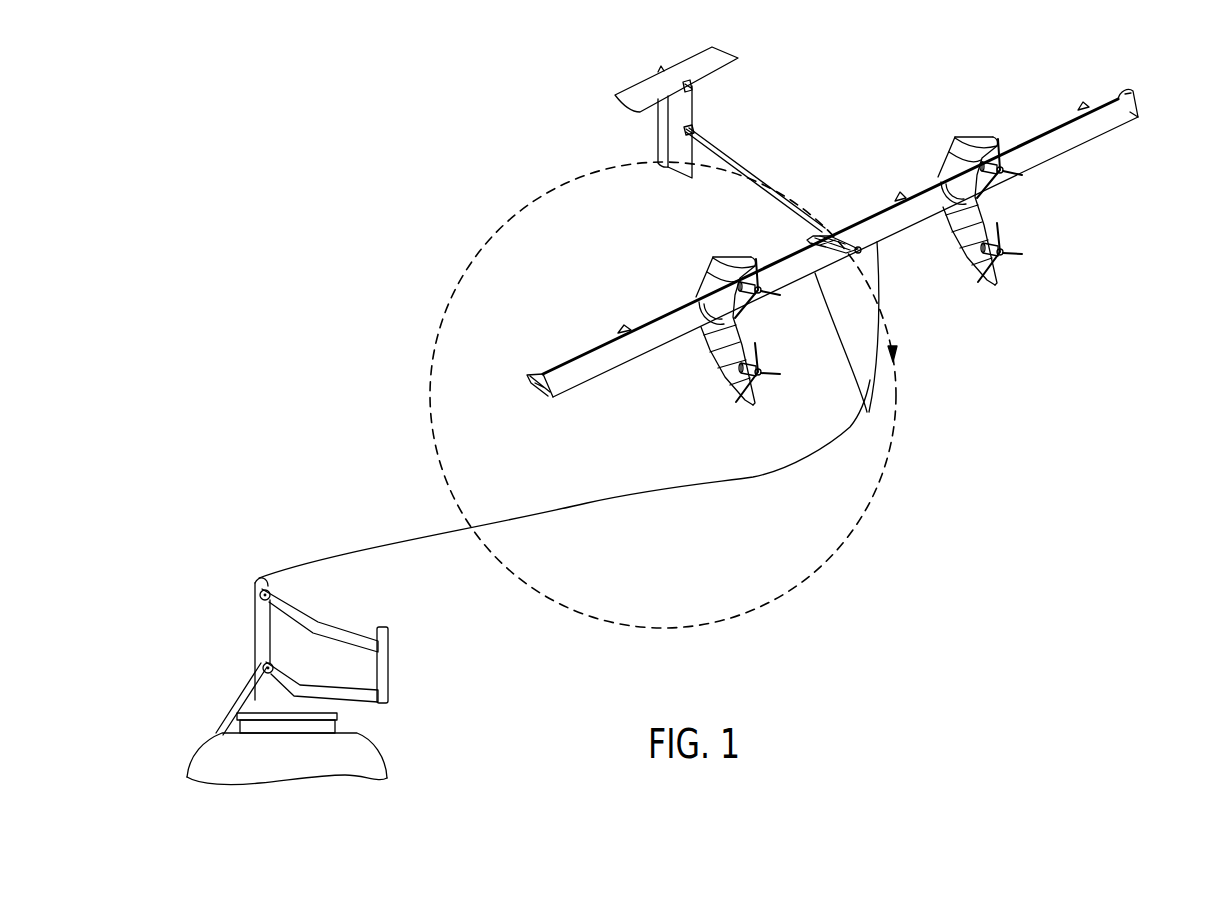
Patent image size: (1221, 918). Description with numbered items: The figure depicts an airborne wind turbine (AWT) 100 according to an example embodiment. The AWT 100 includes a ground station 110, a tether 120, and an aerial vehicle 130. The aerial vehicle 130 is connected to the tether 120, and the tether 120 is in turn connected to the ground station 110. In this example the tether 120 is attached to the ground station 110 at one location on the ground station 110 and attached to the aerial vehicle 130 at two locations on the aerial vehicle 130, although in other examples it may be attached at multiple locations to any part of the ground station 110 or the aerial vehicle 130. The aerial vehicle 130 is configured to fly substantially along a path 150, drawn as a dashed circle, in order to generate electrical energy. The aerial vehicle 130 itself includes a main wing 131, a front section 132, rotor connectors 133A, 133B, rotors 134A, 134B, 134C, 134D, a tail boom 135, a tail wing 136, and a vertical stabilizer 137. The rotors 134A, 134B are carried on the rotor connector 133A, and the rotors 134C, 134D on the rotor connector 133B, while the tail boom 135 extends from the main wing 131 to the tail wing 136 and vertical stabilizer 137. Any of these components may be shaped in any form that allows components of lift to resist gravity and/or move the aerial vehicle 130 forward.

The airborne wind turbine 100 is at (255, 220).
The ground station 110 is at (262, 633).
The tether 120 is at (376, 540).
The aerial vehicle 130 is at (1214, 80).
The main wing 131 is at (893, 220).
The front section 132 is at (857, 255).
The rotor connector 133A is at (950, 147).
The rotor connector 133B is at (713, 268).
The rotor 134A is at (1003, 180).
The rotor 134B is at (1003, 256).
The rotor 134C is at (763, 298).
The rotor 134D is at (763, 380).
The tail boom 135 is at (747, 180).
The tail wing 136 is at (731, 47).
The vertical stabilizer 137 is at (682, 173).
The path 150 is at (485, 242).